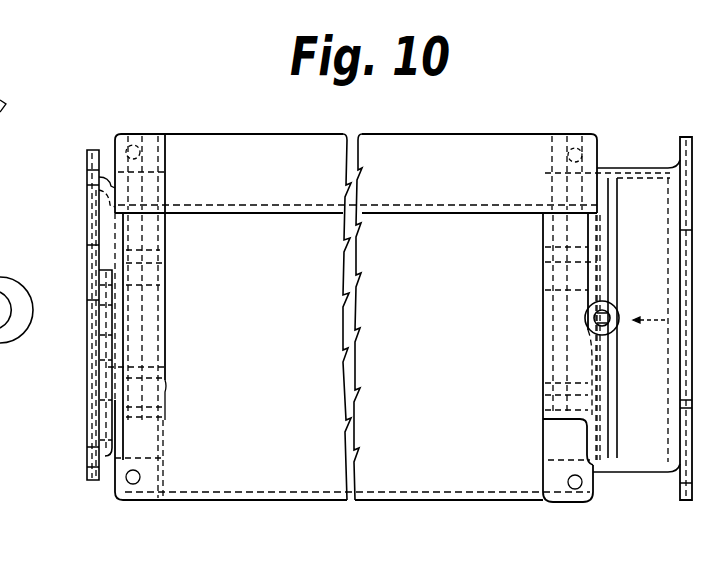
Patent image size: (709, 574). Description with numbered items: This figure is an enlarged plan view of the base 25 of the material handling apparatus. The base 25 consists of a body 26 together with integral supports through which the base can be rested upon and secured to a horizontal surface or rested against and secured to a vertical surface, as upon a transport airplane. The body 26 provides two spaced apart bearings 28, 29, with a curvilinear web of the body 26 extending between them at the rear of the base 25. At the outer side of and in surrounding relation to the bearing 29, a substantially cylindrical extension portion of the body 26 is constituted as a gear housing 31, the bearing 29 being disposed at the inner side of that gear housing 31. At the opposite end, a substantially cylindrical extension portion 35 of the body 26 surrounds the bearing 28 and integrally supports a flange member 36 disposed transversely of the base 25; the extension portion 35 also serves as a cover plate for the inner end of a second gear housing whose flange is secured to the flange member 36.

The base 25 is at (250, 471).
The body 26 is at (300, 471).
The bearing 28 is at (165, 250).
The bearing 29 is at (550, 252).
The gear housing 31 is at (642, 468).
The cylindrical extension portion 35 is at (105, 449).
The flange member 36 is at (88, 466).